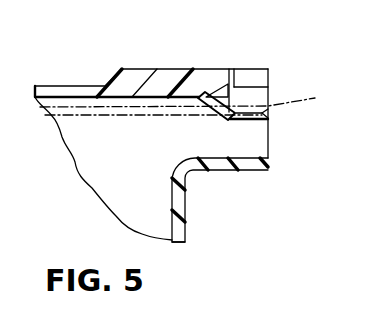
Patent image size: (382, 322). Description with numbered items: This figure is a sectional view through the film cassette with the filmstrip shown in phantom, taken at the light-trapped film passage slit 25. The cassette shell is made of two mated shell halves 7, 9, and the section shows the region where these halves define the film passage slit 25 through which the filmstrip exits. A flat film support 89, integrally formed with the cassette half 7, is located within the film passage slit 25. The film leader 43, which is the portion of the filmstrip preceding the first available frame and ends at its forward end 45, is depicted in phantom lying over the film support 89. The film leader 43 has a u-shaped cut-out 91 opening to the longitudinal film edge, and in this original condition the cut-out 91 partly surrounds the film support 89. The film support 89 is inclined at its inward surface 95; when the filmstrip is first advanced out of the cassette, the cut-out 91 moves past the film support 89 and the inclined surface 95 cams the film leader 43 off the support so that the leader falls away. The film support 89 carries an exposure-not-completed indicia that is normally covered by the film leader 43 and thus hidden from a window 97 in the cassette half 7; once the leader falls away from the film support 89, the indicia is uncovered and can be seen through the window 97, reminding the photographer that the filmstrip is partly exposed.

The cassette shell half 7 is at (73, 88).
The cassette shell half 9 is at (185, 208).
The film passage slit 25 is at (262, 96).
The film leader 43 is at (143, 116).
The forward end of film leader 45 is at (190, 98).
The film support 89 is at (254, 123).
The u-shaped cut-out 91 is at (234, 108).
The inclined inward surface 95 is at (228, 120).
The window 97 is at (250, 78).